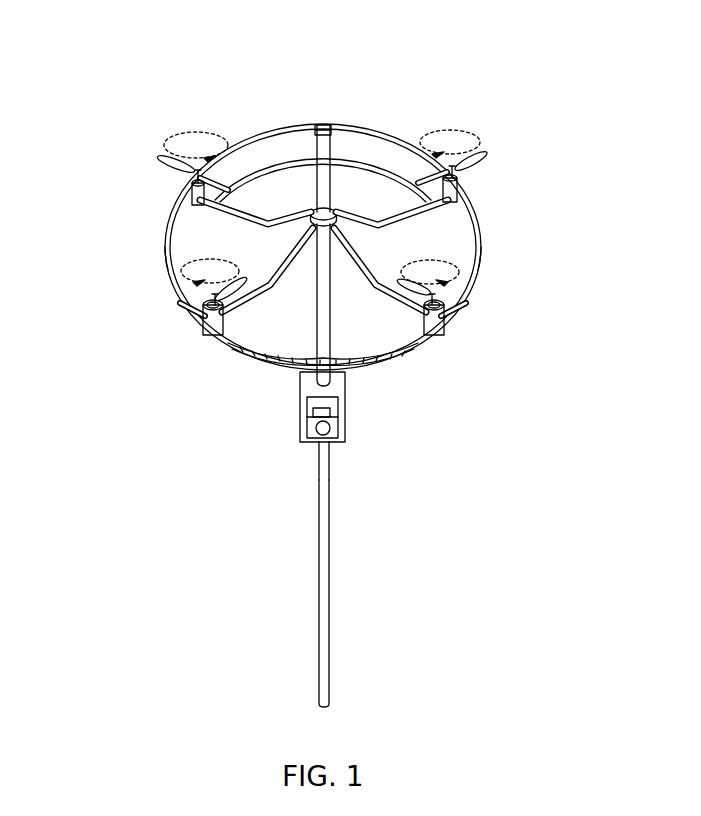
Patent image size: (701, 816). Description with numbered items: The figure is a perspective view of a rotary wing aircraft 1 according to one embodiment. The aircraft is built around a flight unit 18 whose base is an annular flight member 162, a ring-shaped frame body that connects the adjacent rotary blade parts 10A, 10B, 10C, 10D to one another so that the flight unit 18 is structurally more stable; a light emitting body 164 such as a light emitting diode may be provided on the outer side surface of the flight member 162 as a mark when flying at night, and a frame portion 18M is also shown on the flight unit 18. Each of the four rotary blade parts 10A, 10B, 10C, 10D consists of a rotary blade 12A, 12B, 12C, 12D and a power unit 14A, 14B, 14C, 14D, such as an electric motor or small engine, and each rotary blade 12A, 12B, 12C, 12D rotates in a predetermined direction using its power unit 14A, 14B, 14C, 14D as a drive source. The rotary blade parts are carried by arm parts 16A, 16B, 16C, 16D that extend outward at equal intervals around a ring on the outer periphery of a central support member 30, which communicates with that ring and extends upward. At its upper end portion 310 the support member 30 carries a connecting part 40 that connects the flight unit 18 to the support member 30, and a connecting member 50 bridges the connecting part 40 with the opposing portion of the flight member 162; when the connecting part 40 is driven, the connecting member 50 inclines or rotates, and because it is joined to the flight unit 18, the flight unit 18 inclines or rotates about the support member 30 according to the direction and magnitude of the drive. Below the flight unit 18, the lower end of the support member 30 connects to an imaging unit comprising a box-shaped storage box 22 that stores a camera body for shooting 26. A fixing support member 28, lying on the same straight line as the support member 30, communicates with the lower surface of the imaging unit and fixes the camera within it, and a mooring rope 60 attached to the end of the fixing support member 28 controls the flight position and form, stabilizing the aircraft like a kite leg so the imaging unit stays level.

The rotary wing aircraft 1 is at (497, 79).
The rotary blade part 10A is at (148, 305).
The rotary blade part 10B is at (493, 306).
The rotary blade part 10C is at (510, 176).
The rotary blade part 10D is at (133, 177).
The rotary blade 12A is at (190, 300).
The rotary blade 12B is at (462, 300).
The rotary blade 12C is at (472, 160).
The rotary blade 12D is at (174, 162).
The power unit 14A is at (198, 328).
The power unit 14B is at (450, 327).
The power unit 14C is at (458, 196).
The power unit 14D is at (192, 196).
The arm part 16A is at (271, 288).
The arm part 16B is at (378, 288).
The arm part 16C is at (389, 222).
The arm part 16D is at (268, 204).
The flight unit 18 is at (413, 128).
The frame member 18M is at (319, 255).
The storage box 22 is at (300, 420).
The camera body for shooting 26 is at (345, 426).
The fixing support member 28 is at (319, 458).
The support member 30 is at (332, 188).
The connecting part 40 is at (324, 125).
The connecting member 50 is at (371, 133).
The mooring rope 60 is at (329, 585).
The flight member 162 is at (400, 350).
The light emitting body 164 is at (238, 350).
The upper end portion 310 is at (316, 130).